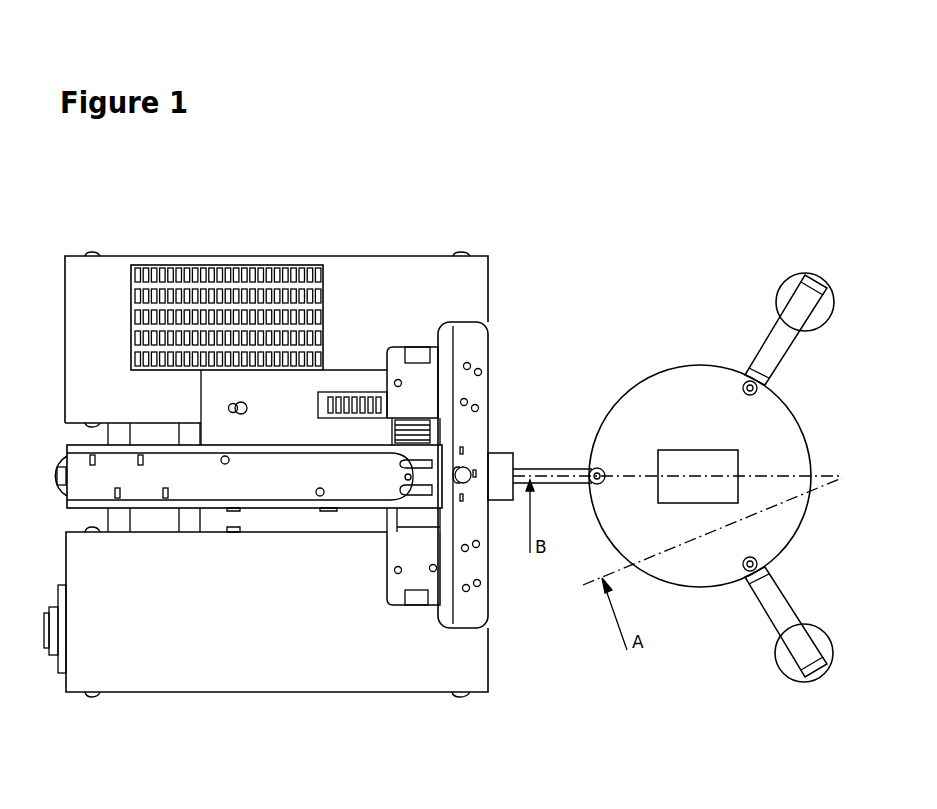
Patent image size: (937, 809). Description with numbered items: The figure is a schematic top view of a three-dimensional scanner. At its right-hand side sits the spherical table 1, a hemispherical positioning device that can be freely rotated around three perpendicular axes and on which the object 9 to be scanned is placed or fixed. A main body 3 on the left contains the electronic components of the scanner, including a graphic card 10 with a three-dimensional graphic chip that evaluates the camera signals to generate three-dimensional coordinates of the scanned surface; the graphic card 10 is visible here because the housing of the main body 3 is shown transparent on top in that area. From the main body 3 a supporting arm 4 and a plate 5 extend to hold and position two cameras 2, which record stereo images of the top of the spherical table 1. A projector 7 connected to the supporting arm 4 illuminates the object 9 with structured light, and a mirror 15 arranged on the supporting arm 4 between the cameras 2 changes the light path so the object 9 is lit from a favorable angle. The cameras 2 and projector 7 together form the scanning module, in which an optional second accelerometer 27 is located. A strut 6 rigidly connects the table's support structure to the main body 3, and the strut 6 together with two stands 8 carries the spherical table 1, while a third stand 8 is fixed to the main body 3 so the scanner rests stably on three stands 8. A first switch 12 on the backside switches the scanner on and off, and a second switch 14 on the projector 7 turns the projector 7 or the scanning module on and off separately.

The spherical table 1 is at (695, 520).
The cameras 2 is at (428, 383).
The main body 3 is at (270, 712).
The supporting arm 4 is at (295, 472).
The plate 5 is at (473, 345).
The strut 6 is at (545, 465).
The projector 7 is at (283, 402).
The stands 8 is at (56, 490).
The object 9 is at (690, 458).
The graphic card 10 is at (191, 268).
The first switch 12 is at (55, 645).
The second switch 14 is at (239, 402).
The mirror 15 is at (500, 500).
The second accelerometer 27 is at (398, 378).